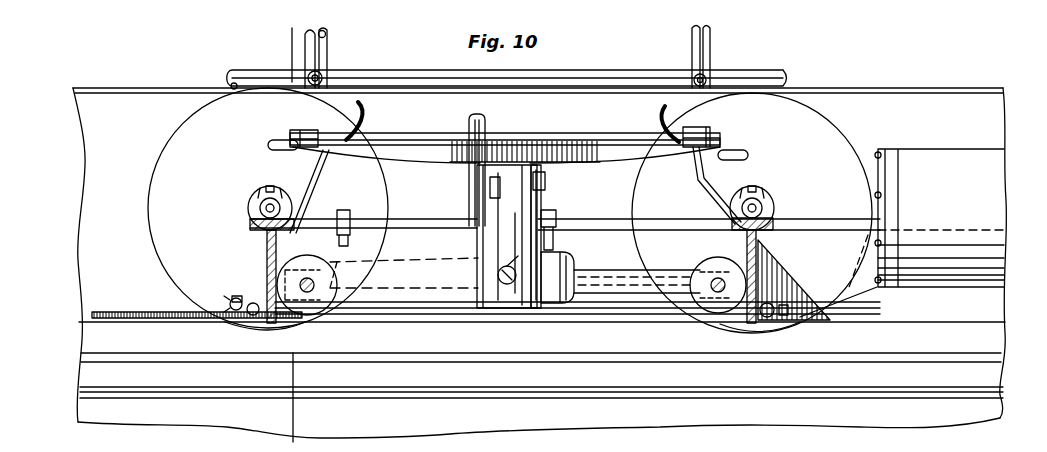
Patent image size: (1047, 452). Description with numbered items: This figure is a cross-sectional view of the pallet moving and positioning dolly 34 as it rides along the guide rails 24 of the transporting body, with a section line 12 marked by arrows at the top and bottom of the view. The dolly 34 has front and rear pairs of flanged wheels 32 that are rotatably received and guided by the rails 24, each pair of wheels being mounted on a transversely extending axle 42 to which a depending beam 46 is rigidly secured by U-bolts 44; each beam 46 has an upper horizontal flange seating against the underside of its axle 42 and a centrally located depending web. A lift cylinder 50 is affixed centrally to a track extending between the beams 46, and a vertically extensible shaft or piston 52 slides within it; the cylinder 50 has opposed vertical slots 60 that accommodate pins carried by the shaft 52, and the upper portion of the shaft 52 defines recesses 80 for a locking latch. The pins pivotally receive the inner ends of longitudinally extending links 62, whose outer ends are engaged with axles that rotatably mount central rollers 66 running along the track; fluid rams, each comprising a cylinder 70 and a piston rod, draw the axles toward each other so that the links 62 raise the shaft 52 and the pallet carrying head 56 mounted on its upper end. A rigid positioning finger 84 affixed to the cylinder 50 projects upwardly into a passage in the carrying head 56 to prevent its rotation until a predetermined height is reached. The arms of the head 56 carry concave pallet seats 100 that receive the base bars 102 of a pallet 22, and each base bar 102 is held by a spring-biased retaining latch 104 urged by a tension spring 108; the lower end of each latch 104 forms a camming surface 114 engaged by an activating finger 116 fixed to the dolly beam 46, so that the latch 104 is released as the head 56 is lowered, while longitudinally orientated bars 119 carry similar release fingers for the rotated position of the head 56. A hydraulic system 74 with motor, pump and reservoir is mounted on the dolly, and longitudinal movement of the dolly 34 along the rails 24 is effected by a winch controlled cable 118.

The section line 12- 12 is at (258, 43).
The pallet 22 is at (688, 50).
The guide rails 24 is at (161, 86).
The flanged wheels 32 is at (859, 143).
The pallet moving and positioning dolly 34 is at (817, 87).
The axle 42 is at (281, 190).
The U-bolts 44 is at (758, 195).
The depending beam 46 is at (266, 270).
The lift cylinder 50 is at (478, 238).
The vertically extensible shaft or piston 52 is at (545, 206).
The pallet carrying head 56 is at (573, 131).
The vertical slots 60 is at (556, 219).
The links 62 is at (598, 268).
The central roller 66 is at (322, 272).
The cylinder 70 is at (402, 250).
The hydraulic system 74 is at (922, 170).
The seats or recesses 80 is at (542, 187).
The retaining or positioning finger 84 is at (488, 130).
The concave pallet seat 100 is at (298, 131).
The pallet base bar 102 is at (307, 78).
The retaining latch 104 is at (364, 122).
The tension spring 108 is at (370, 152).
The camming surface 114 is at (326, 152).
The activating finger 116 is at (318, 194).
The winch controlled cable 118 is at (169, 312).
The longitudinally orientated bars 119 is at (649, 228).